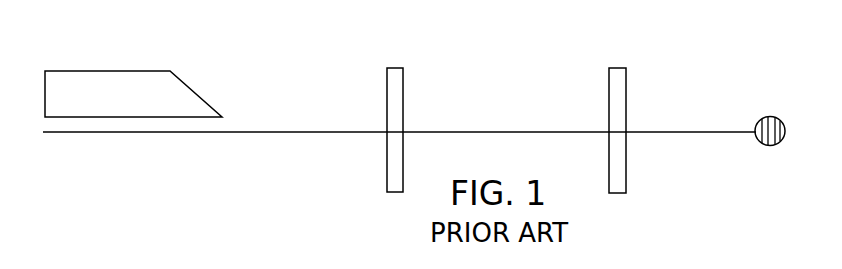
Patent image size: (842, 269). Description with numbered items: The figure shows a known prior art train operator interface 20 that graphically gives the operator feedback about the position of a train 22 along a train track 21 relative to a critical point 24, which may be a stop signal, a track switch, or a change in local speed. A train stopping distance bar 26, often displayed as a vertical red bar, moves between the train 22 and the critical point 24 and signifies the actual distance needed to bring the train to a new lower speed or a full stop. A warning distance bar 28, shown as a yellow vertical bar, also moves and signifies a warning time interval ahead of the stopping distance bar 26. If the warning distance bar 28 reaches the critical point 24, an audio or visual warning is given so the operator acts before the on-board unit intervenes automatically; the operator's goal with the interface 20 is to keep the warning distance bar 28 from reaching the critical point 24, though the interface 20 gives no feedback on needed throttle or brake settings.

The train operator interface 20 is at (166, 146).
The train track 21 is at (282, 133).
The train 22 is at (150, 80).
The critical point 24 is at (763, 147).
The train stopping distance bar 26 is at (391, 193).
The warning distance bar 28 is at (622, 191).